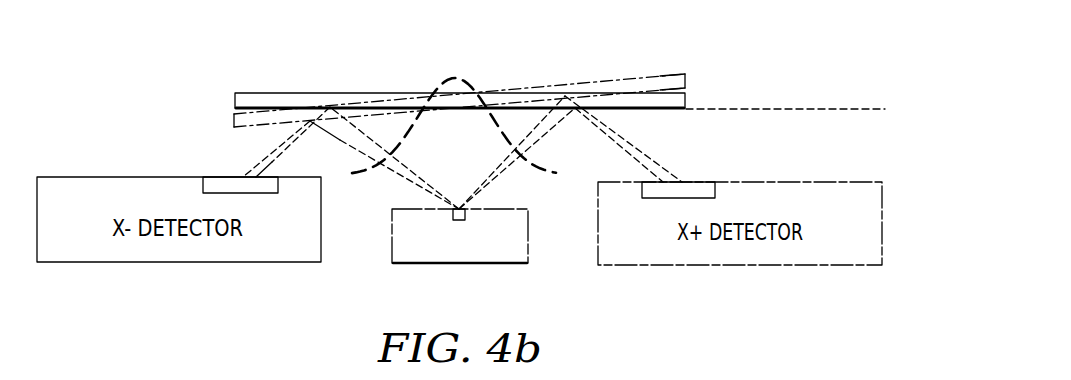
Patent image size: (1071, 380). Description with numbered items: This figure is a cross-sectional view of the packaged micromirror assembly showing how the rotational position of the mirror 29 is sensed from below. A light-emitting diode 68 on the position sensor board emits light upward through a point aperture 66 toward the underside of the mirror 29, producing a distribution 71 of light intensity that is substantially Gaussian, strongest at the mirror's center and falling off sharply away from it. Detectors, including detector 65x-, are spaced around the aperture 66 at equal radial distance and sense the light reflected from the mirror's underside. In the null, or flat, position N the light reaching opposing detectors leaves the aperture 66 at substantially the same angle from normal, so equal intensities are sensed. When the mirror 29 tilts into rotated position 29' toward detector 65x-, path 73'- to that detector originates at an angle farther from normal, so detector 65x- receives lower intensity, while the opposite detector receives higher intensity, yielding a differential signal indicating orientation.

The mirror 29 is at (486, 93).
The rotated position of mirror 29' is at (459, 74).
The distribution of light intensity 71 is at (473, 75).
The light path to detector 65x− (rotated mirror) 73'- is at (331, 158).
The light detector 65x- is at (201, 188).
The point aperture 66 is at (467, 217).
The light-emitting diode 68 is at (422, 267).
The null position N is at (796, 110).